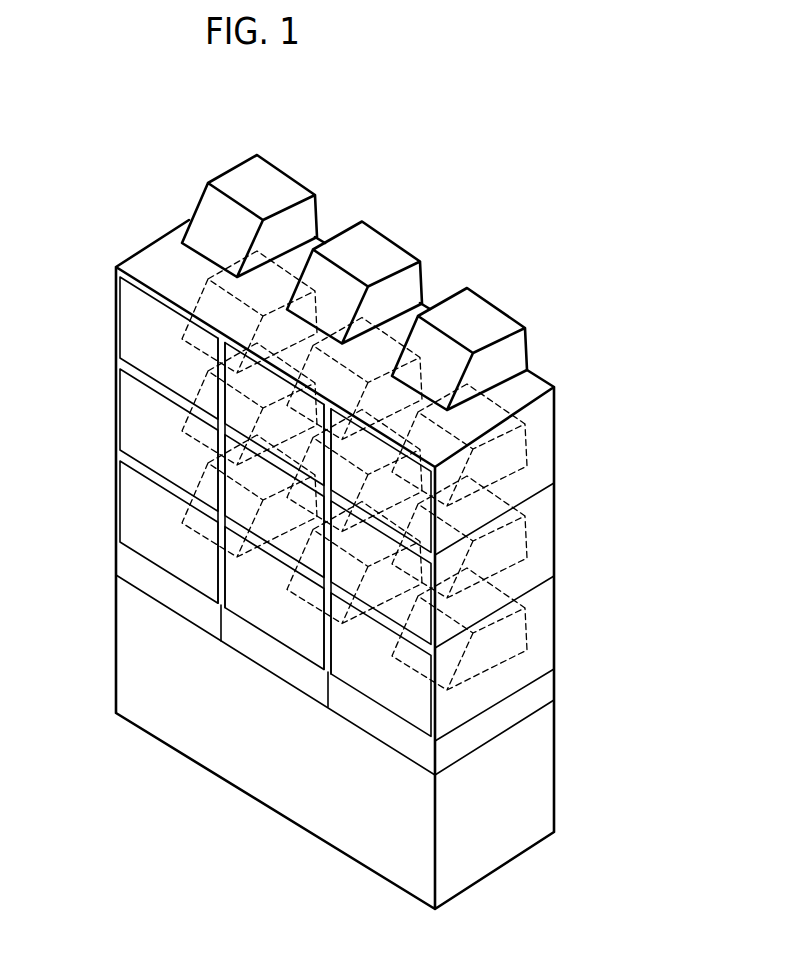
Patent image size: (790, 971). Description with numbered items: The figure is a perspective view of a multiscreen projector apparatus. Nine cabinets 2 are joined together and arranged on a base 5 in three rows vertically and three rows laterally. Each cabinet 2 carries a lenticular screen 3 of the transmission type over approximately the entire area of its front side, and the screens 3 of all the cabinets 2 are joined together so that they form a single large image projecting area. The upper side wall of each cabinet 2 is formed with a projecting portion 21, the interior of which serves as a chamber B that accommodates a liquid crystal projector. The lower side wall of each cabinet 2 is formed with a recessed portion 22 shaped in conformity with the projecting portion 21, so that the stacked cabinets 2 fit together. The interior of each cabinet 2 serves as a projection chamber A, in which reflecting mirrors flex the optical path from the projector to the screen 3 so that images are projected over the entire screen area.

The cabinet 2 is at (609, 409).
The lenticular screen 3 is at (138, 318).
The base 5 is at (512, 708).
The projecting portion 21 is at (272, 188).
The recessed portion 22 is at (157, 575).
The projection chamber A is at (176, 286).
The chamber B is at (218, 220).